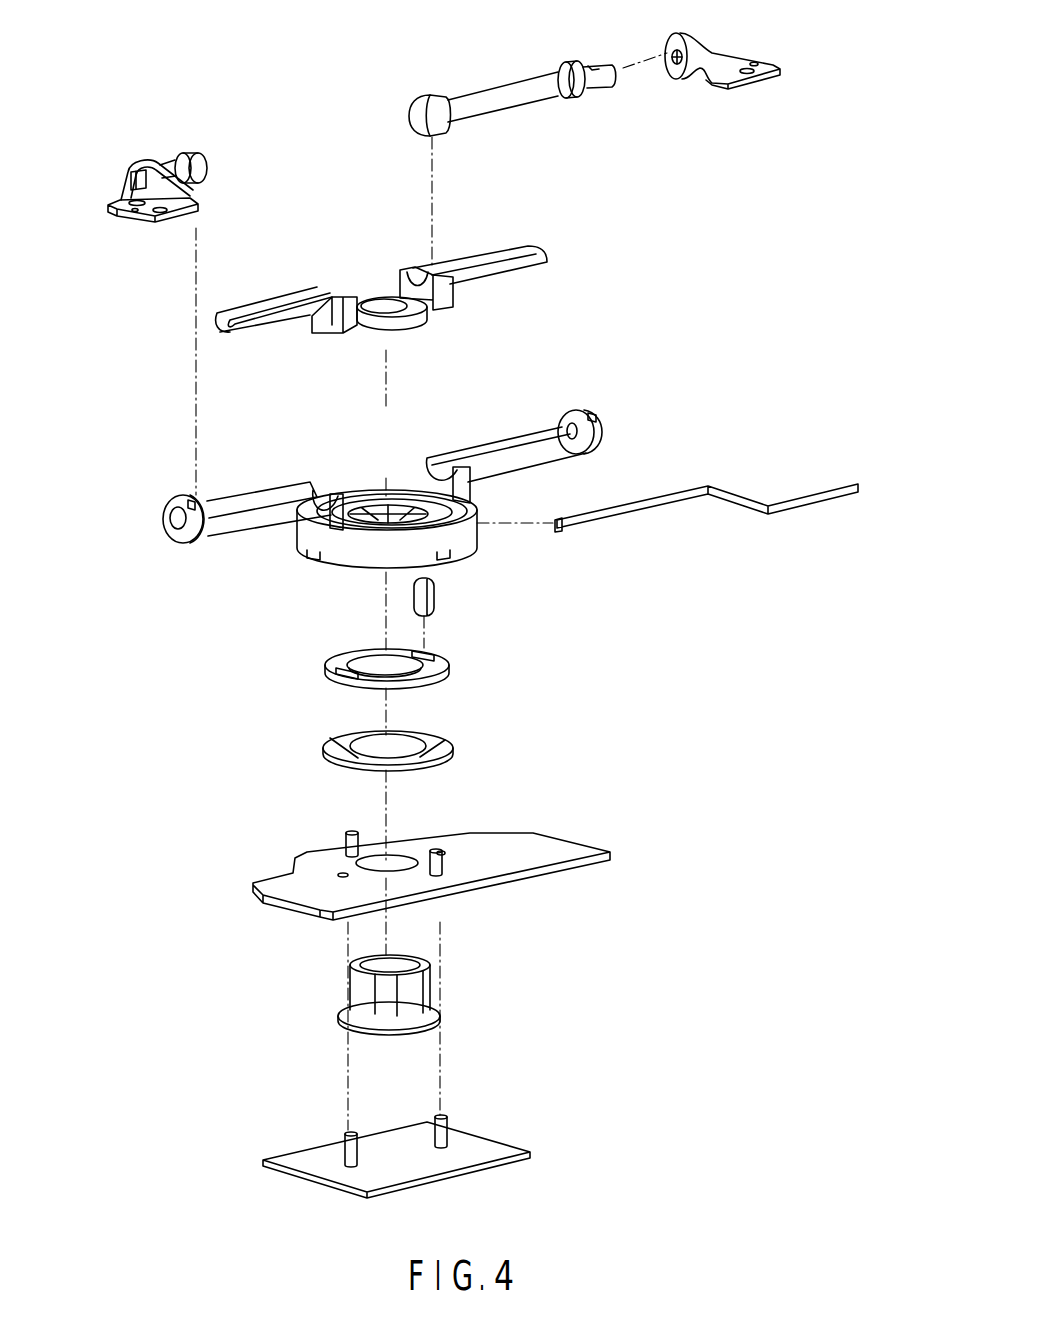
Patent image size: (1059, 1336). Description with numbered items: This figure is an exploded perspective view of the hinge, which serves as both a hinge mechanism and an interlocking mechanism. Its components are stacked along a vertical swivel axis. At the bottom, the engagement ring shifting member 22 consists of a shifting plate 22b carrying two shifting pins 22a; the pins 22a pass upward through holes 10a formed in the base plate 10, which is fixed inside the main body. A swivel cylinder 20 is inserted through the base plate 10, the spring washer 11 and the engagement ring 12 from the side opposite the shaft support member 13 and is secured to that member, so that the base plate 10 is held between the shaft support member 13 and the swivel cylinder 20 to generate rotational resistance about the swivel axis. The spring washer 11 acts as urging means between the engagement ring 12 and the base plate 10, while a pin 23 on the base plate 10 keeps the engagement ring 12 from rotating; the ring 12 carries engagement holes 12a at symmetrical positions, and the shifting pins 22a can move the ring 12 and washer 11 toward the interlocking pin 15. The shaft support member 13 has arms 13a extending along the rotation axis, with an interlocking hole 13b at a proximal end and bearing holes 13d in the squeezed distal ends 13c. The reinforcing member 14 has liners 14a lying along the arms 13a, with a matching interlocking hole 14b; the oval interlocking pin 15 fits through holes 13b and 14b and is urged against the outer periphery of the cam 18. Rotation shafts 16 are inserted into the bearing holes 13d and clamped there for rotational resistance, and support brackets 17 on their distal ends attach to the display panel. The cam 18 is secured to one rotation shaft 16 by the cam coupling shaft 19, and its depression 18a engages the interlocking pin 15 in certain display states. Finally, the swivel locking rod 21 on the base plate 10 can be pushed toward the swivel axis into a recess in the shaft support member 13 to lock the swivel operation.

The base plate 10 is at (434, 856).
The holes 10a is at (441, 851).
The spring washer 11 is at (443, 744).
The engagement ring 12 is at (393, 665).
The engagement holes 12a is at (437, 656).
The shaft support member 13 is at (393, 474).
The arms 13a is at (257, 523).
The interlocking hole 13b is at (470, 503).
The distal ends 13c is at (163, 510).
The bearing holes 13d is at (178, 531).
The reinforcing member 14 is at (393, 311).
The liners 14a is at (253, 327).
The interlocking hole 14b is at (427, 314).
The interlocking pin 15 is at (437, 594).
The rotation shafts 16 is at (587, 62).
The support brackets 17 is at (742, 55).
The cam 18 is at (432, 95).
The depression 18a is at (410, 117).
The cam coupling shaft 19 is at (500, 102).
The swivel cylinder 20 is at (420, 992).
The swivel locking rod 21 is at (697, 499).
The engagement ring shifting member 22 is at (432, 1146).
The shifting pins 22a is at (345, 1137).
The shifting plate 22b is at (455, 1160).
The pin 23 is at (347, 841).